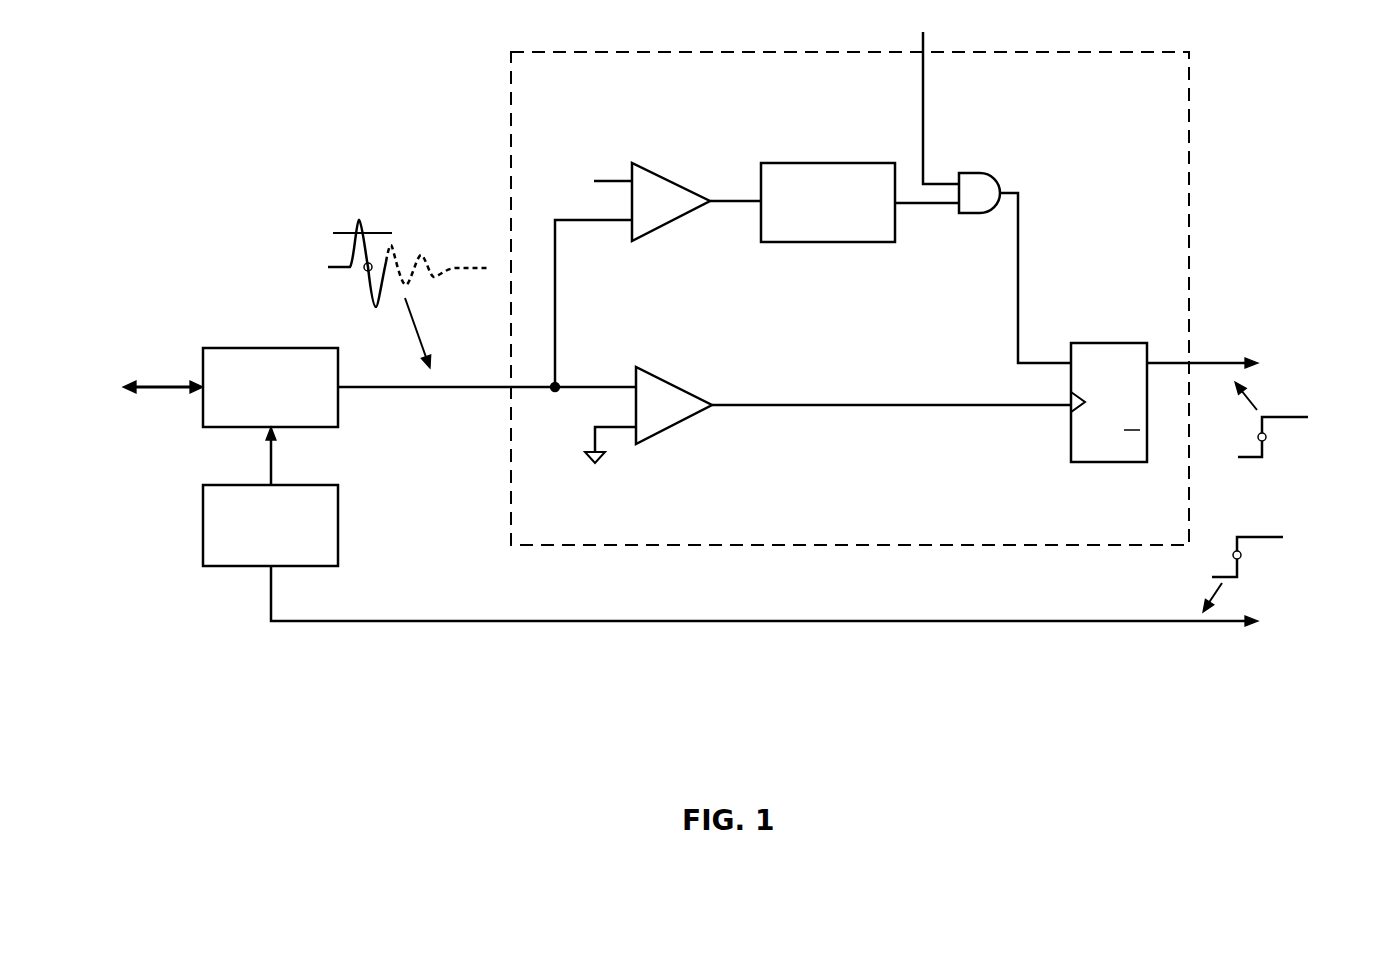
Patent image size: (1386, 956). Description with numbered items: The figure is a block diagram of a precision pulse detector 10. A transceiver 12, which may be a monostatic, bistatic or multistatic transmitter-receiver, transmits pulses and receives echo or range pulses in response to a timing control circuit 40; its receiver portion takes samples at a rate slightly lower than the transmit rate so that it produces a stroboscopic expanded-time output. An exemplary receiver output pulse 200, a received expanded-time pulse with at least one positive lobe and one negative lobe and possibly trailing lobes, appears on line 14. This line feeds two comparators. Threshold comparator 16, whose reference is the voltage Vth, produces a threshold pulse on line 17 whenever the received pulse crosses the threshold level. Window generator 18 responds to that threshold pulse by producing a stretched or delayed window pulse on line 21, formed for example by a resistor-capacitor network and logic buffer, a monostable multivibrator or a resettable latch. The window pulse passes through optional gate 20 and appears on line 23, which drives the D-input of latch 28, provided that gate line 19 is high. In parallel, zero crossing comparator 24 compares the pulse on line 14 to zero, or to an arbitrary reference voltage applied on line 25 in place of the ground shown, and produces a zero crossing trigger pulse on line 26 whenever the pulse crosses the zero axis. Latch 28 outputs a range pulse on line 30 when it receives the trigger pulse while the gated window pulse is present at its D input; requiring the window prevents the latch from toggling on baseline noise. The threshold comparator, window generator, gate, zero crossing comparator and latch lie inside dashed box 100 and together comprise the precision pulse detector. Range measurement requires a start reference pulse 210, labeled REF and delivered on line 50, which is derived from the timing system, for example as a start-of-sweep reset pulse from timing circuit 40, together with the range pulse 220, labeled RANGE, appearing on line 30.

The precision pulse detector 10 is at (224, 108).
The transceiver 12 is at (280, 348).
The line 14 is at (460, 390).
The threshold comparator 16 is at (665, 174).
The line 17 is at (738, 196).
The window generator 18 is at (852, 160).
The gate line 19 is at (925, 132).
The gate 20 is at (985, 172).
The line 21 is at (925, 205).
The line 23 is at (1017, 263).
The zero crossing comparator 24 is at (672, 382).
The line 25 is at (618, 437).
The line 26 is at (830, 400).
The latch 28 is at (1120, 343).
The line 30 is at (1203, 363).
The timing control circuit 40 is at (339, 530).
The line 50 is at (472, 621).
The dashed box 100 is at (1189, 165).
The receiver output pulse 200 is at (409, 212).
The start reference pulse 210 is at (1266, 563).
The range pulse 220 is at (1292, 452).